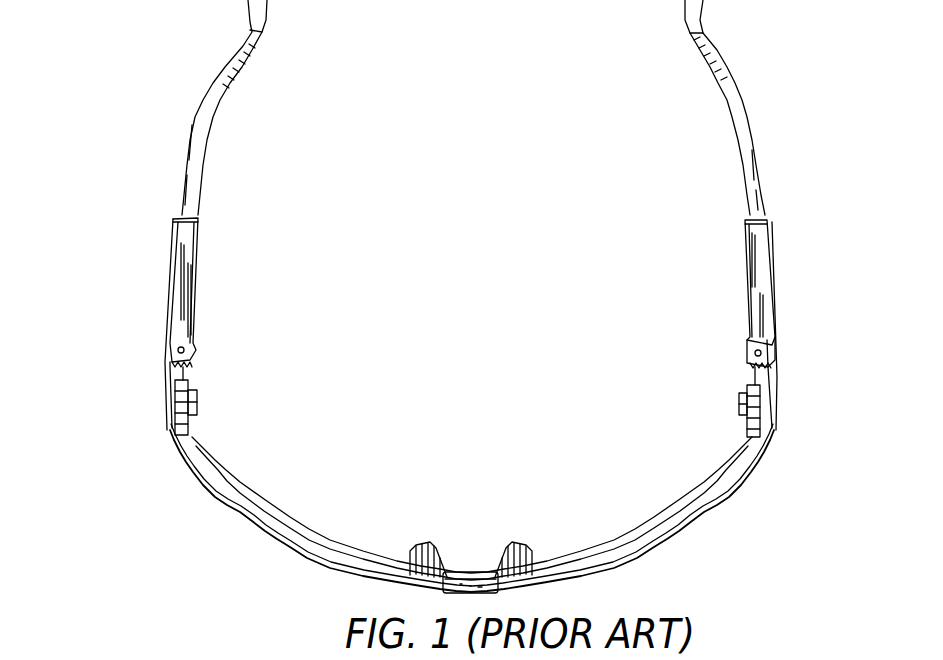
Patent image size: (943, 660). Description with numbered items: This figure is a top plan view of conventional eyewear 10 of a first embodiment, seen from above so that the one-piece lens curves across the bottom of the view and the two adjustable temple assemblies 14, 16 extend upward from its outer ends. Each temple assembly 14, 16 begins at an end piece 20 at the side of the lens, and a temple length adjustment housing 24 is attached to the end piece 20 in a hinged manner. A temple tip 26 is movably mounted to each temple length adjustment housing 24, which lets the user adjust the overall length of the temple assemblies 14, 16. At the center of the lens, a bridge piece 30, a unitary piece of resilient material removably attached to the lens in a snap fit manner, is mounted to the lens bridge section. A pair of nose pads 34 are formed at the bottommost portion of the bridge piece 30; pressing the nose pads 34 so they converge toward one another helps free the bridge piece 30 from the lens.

The eyewear 10 is at (464, 296).
The adjustable temple assembly 14 is at (158, 335).
The adjustable temple assembly 16 is at (779, 318).
The end piece 20 is at (170, 411).
The temple length adjustment housing 24 is at (183, 293).
The temple tip 26 is at (198, 127).
The bridge piece 30 is at (468, 580).
The nose pads 34 is at (420, 543).